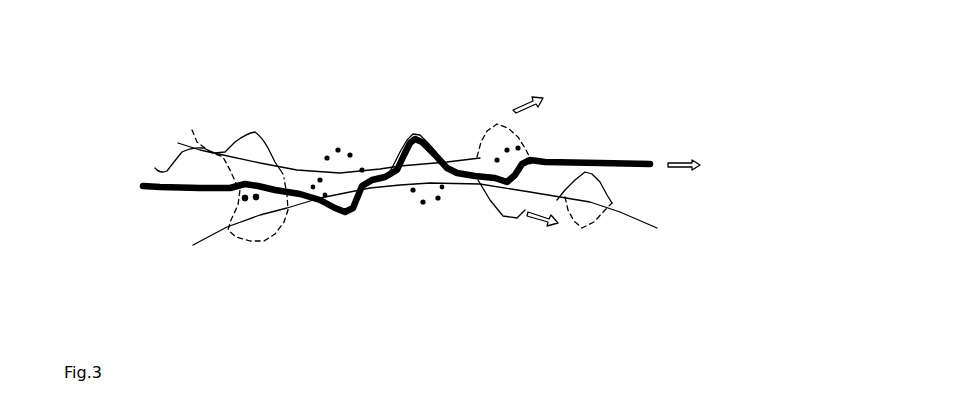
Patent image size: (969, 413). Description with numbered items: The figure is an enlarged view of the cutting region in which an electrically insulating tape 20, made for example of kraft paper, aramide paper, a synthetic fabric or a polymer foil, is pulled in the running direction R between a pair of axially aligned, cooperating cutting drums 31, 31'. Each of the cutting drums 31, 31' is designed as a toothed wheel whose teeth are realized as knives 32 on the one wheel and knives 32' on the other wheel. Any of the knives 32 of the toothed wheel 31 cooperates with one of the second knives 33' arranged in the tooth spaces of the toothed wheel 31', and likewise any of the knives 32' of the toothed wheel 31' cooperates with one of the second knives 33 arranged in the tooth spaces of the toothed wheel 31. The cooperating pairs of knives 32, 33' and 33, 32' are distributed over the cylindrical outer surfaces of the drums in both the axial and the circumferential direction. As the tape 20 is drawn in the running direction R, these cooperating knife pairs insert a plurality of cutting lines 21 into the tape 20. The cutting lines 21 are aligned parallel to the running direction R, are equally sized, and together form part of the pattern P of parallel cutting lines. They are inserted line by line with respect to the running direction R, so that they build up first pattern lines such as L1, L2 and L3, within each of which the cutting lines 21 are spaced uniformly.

The tape 20 is at (182, 189).
The cutting lines 21 is at (342, 210).
The cutting drum 31 is at (594, 206).
The cutting drum 31' is at (535, 158).
The knives 32 is at (253, 242).
The knives 32' is at (314, 176).
The second knives 33 is at (266, 208).
The second knives 33' is at (219, 120).
The first pattern line L1 is at (340, 210).
The first pattern line L2 is at (411, 165).
The first pattern line L3 is at (476, 252).
The pattern P is at (605, 162).
The running direction R is at (695, 158).